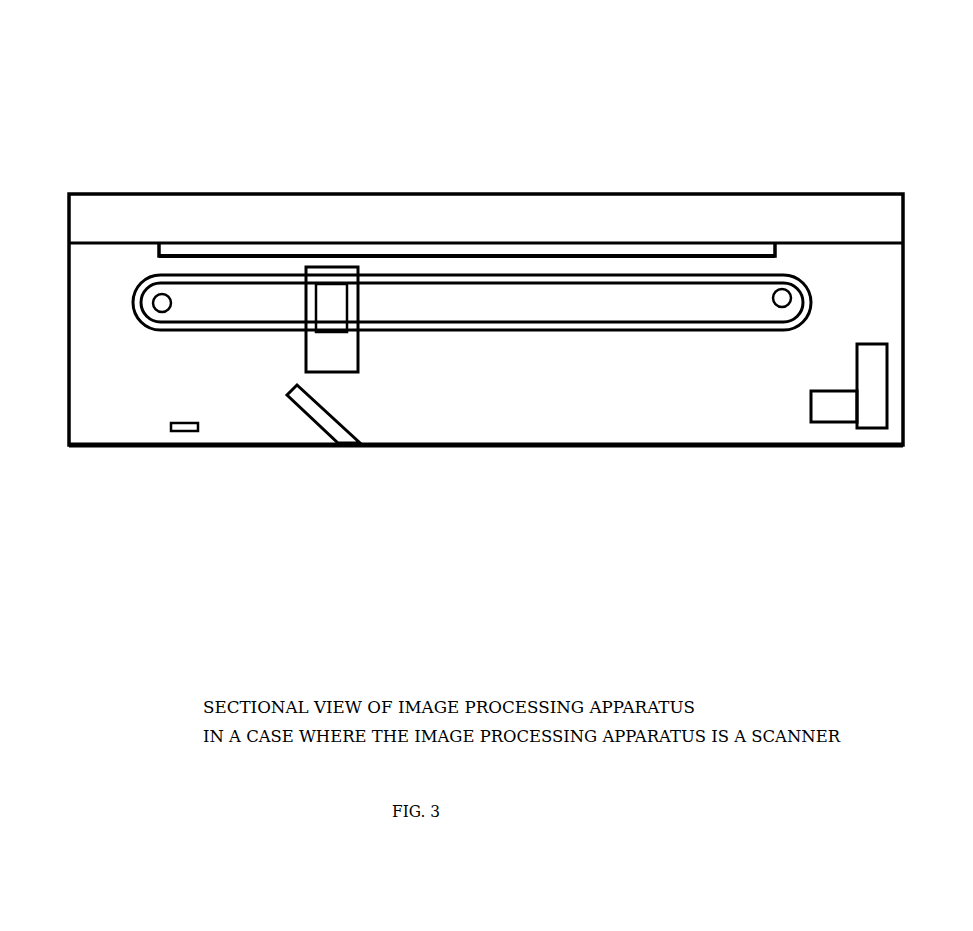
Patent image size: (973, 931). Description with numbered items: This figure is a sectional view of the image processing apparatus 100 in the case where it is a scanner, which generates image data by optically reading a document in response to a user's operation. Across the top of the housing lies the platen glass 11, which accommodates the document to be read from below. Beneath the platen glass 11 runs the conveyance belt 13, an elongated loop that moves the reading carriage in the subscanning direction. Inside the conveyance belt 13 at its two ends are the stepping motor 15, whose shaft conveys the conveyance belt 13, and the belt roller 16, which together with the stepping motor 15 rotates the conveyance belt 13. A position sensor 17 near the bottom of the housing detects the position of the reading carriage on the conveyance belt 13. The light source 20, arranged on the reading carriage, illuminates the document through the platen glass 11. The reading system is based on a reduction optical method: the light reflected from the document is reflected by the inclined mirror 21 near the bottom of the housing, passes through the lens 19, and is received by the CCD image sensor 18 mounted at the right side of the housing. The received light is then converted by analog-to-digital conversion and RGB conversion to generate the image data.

The image processing apparatus 100 is at (822, 102).
The platen glass 11 is at (622, 240).
The conveyance belt 13 is at (812, 296).
The stepping motor 15 is at (156, 313).
The belt roller 16 is at (781, 308).
The position sensor 17 is at (187, 422).
The CCD image sensor 18 is at (878, 345).
The lens 19 is at (838, 422).
The light source 20 is at (330, 280).
The mirror 21 is at (317, 423).